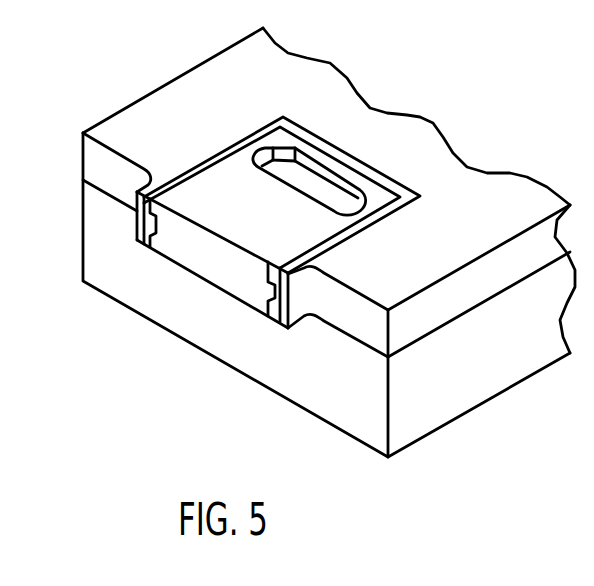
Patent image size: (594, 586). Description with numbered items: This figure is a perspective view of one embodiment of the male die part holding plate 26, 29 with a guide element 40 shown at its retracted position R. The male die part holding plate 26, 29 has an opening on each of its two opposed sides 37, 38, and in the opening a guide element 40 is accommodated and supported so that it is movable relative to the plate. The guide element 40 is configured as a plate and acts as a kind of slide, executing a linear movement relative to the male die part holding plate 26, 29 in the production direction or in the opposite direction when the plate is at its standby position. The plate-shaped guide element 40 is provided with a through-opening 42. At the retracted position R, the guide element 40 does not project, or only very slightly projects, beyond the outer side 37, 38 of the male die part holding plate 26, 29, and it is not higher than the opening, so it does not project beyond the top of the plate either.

The male die part holding plate 26 is at (329, 242).
The male die part holding plate 29 is at (299, 92).
The guide element 40 is at (280, 246).
The retracted position R is at (280, 246).
The through-opening 42 is at (328, 192).
The opposed side 37 is at (219, 317).
The opposed side 38 is at (288, 318).